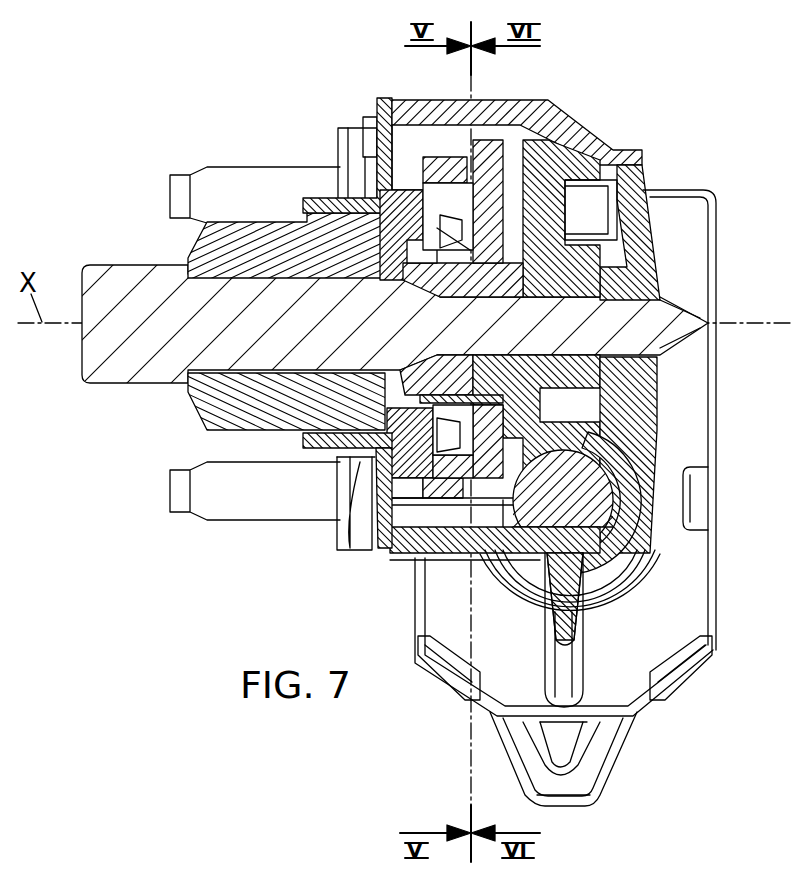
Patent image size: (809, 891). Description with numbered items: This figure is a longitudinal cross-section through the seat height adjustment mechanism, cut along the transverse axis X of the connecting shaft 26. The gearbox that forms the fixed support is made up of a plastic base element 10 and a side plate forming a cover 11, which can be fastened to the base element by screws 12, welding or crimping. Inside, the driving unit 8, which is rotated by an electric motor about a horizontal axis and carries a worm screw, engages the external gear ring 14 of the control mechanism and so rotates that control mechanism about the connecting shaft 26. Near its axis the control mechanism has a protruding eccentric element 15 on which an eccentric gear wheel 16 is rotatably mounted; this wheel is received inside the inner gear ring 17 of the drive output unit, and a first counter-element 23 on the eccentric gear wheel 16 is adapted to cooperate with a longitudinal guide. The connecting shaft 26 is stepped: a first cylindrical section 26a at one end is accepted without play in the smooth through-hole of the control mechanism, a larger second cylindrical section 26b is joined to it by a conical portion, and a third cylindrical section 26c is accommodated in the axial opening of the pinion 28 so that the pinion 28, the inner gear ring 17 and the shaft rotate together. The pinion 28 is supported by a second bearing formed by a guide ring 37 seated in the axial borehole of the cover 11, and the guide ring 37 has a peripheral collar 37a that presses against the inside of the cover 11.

The driving unit 8 is at (583, 500).
The base element 10 is at (653, 285).
The cover 11 is at (382, 553).
The screws 12 is at (358, 530).
The external gear ring 14 is at (607, 210).
The eccentric element 15 is at (618, 355).
The eccentric gear wheel 16 is at (423, 185).
The inner gear ring 17 is at (348, 458).
The first counter-element 23 is at (490, 217).
The connecting shaft 26 is at (135, 300).
The first cylindrical section 26a is at (540, 300).
The second cylindrical section 26b is at (358, 300).
The third cylindrical section 26c is at (262, 300).
The pinion 28 is at (213, 402).
The guide ring 37 is at (318, 440).
The flange bar 37a is at (380, 520).